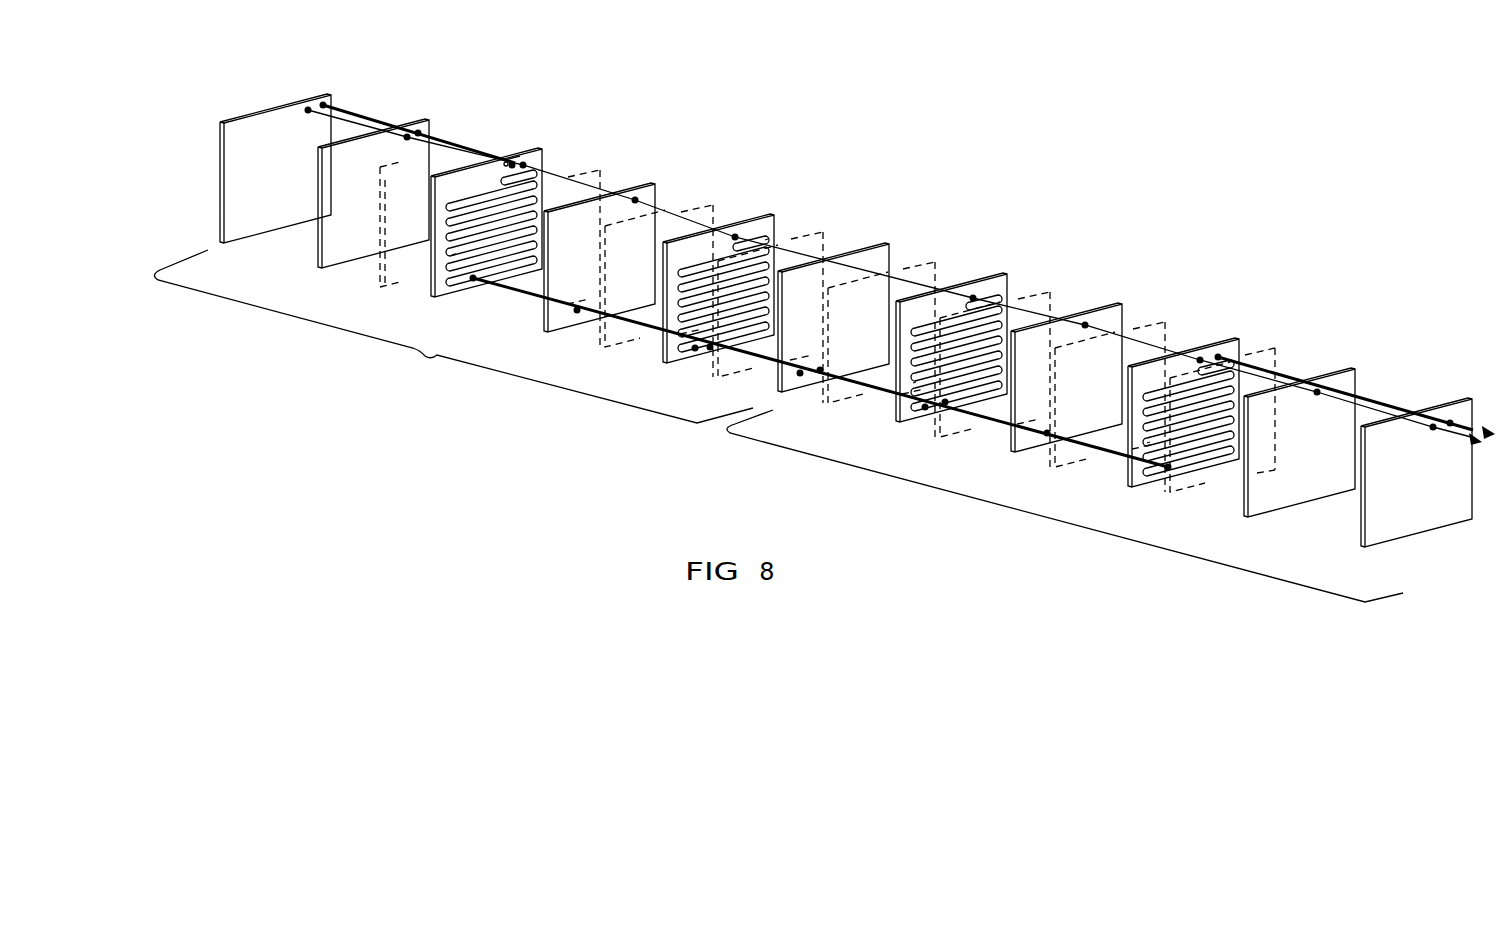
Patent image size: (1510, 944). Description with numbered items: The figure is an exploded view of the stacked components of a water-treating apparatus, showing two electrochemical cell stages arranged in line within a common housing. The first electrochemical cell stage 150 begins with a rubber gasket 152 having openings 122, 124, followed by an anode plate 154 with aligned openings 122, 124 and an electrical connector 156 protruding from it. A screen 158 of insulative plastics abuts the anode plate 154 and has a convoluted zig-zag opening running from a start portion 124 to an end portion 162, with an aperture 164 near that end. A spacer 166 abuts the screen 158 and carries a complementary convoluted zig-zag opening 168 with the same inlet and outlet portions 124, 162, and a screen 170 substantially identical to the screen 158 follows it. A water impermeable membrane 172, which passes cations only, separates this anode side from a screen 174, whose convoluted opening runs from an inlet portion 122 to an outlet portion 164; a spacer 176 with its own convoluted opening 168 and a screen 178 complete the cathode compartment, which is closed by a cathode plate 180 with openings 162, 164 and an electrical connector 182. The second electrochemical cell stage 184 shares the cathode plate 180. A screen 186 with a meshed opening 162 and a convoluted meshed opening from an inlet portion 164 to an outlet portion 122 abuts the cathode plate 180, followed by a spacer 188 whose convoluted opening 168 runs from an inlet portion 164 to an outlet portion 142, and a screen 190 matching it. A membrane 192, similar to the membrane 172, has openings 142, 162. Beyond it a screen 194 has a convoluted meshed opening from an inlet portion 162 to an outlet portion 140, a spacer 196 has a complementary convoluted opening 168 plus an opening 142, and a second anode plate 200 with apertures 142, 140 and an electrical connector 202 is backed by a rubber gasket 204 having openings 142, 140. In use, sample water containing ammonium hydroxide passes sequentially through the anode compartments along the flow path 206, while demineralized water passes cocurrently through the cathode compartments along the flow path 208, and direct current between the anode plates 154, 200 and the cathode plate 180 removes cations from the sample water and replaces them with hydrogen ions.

The opening 122 is at (308, 110).
The opening 124 is at (323, 105).
The opening 140 is at (1220, 357).
The opening 142 is at (973, 298).
The first electrochemical cell stage 150 is at (420, 352).
The rubber gasket 152 is at (253, 127).
The anode plate 154 is at (352, 247).
The electrical connector 156 is at (400, 112).
The screen 158 is at (440, 150).
The end portion 162 is at (577, 310).
The aperture 164 is at (695, 348).
The spacer 166 is at (512, 165).
The convoluted zig-zag shaped opening 168 is at (452, 255).
The screen 170 is at (572, 160).
The water impermeable membrane 172 is at (615, 205).
The screen 174 is at (662, 195).
The spacer 176 is at (697, 243).
The screen 178 is at (790, 257).
The cathode plate 180 is at (857, 267).
The electrical connector 182 is at (838, 258).
The second electrochemical cell stage 184 is at (1008, 505).
The screen 186 is at (905, 275).
The spacer 188 is at (990, 280).
The screen 190 is at (1013, 285).
The membrane 192 is at (1037, 337).
The screen 194 is at (1140, 322).
The spacer 196 is at (1168, 365).
The anode plate 200 is at (1298, 490).
The electrical connector 202 is at (1325, 378).
The rubber gasket 204 is at (1443, 517).
The flow path 206 is at (490, 163).
The flow path 208 is at (352, 125).